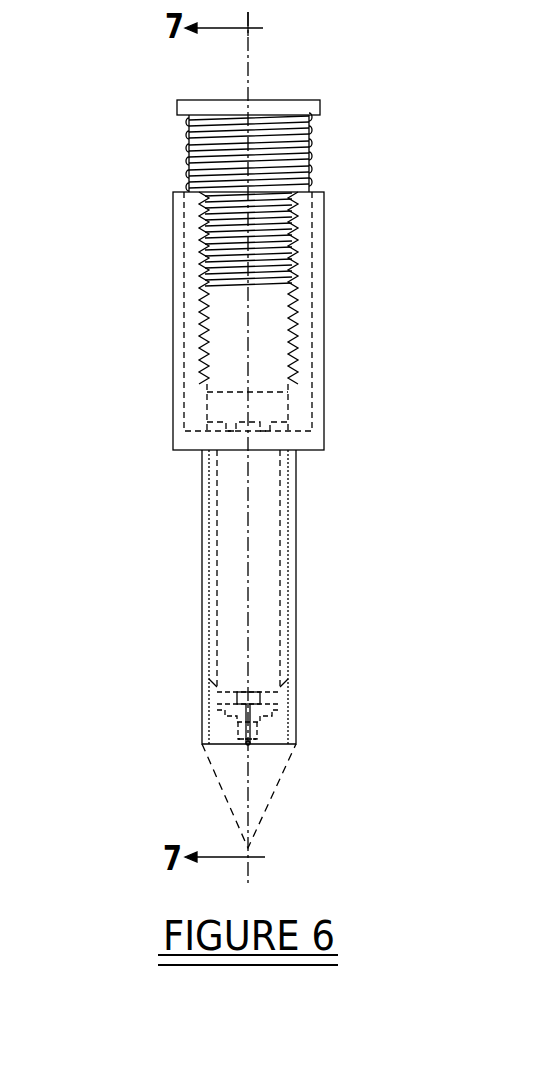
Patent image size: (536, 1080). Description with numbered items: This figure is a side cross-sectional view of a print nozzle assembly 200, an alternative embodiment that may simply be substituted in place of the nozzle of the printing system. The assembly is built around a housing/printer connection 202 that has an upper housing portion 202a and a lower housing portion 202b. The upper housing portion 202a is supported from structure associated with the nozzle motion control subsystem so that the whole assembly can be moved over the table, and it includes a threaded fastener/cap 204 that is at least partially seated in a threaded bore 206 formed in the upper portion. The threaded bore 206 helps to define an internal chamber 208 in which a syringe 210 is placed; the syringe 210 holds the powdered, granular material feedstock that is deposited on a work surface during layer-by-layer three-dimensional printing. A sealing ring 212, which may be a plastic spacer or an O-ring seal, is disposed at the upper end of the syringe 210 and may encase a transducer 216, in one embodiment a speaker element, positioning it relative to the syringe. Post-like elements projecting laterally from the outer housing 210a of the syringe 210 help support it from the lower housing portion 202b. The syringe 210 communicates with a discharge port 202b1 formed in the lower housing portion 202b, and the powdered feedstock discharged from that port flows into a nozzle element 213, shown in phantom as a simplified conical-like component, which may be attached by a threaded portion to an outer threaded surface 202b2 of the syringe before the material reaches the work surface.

The print nozzle assembly 200 is at (310, 65).
The housing/printer connection 202 is at (174, 385).
The upper housing portion 202a is at (315, 242).
The lower housing portion 202b is at (273, 734).
The discharge port 202b1 is at (245, 734).
The outer threaded surface 202b2 is at (278, 699).
The threaded fastener/cap 204 is at (302, 107).
The threaded bore 206 is at (290, 317).
The internal chamber 208 is at (213, 358).
The syringe 210 is at (287, 557).
The outer housing 210a is at (285, 602).
The sealing ring 212 is at (275, 408).
The nozzle element 213 is at (275, 792).
The transducer 216 is at (263, 362).